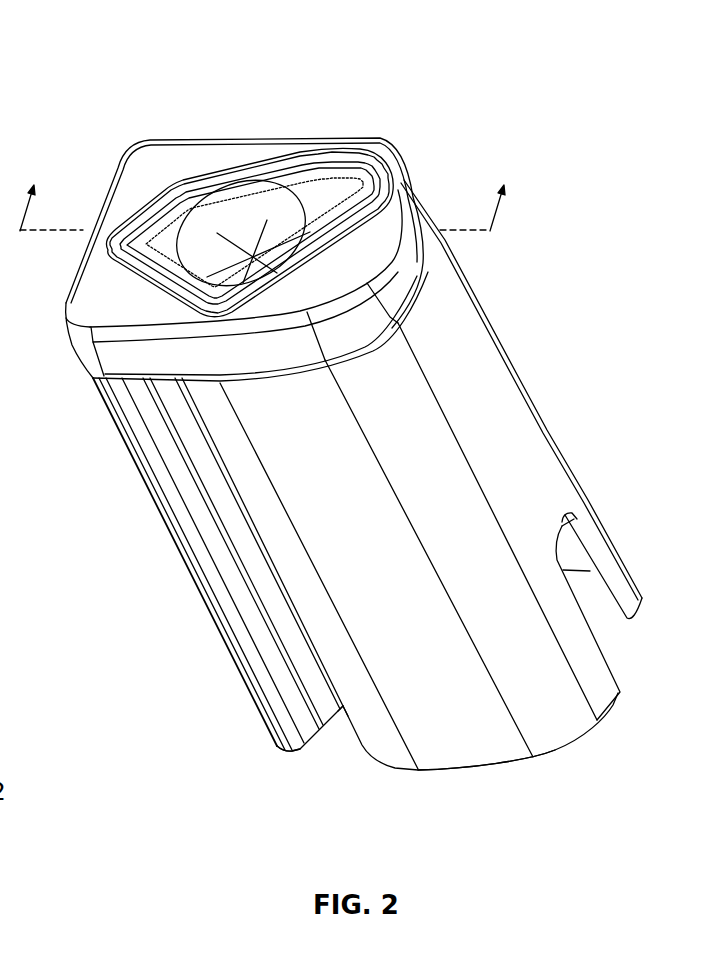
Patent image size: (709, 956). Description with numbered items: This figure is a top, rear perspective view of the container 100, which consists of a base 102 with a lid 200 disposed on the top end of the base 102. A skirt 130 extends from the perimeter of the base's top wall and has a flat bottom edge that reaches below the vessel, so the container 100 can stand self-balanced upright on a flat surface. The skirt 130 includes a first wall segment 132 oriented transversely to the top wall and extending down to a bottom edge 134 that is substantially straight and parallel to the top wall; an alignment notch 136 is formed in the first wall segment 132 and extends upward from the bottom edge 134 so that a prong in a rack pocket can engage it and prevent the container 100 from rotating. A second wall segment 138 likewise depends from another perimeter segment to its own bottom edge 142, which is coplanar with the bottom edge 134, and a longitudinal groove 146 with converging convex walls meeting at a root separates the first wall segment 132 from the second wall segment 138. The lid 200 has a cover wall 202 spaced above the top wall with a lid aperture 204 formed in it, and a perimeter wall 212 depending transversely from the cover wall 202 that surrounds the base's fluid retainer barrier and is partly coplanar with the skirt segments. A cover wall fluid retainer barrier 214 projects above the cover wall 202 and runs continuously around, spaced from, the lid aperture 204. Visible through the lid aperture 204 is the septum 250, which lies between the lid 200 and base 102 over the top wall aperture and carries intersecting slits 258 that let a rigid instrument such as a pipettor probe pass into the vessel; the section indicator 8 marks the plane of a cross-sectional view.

The container 100 is at (352, 435).
The base 102 is at (398, 496).
The skirt 130 is at (558, 416).
The first wall segment 132 is at (520, 496).
The bottom edge of the first wall segment 134 is at (536, 758).
The alignment notch 136 is at (603, 588).
The second wall segment 138 is at (242, 686).
The bottom edge of the second wall segment 142 is at (284, 755).
The groove 146 is at (343, 710).
The lid 200 is at (247, 219).
The cover wall 202 is at (93, 312).
The lid aperture 204 is at (293, 187).
The perimeter wall 212 is at (383, 212).
The cover wall fluid retainer barrier 214 is at (353, 203).
The septum 250 is at (252, 215).
The slits 258 is at (240, 228).
The section line 8- 8 is at (269, 193).